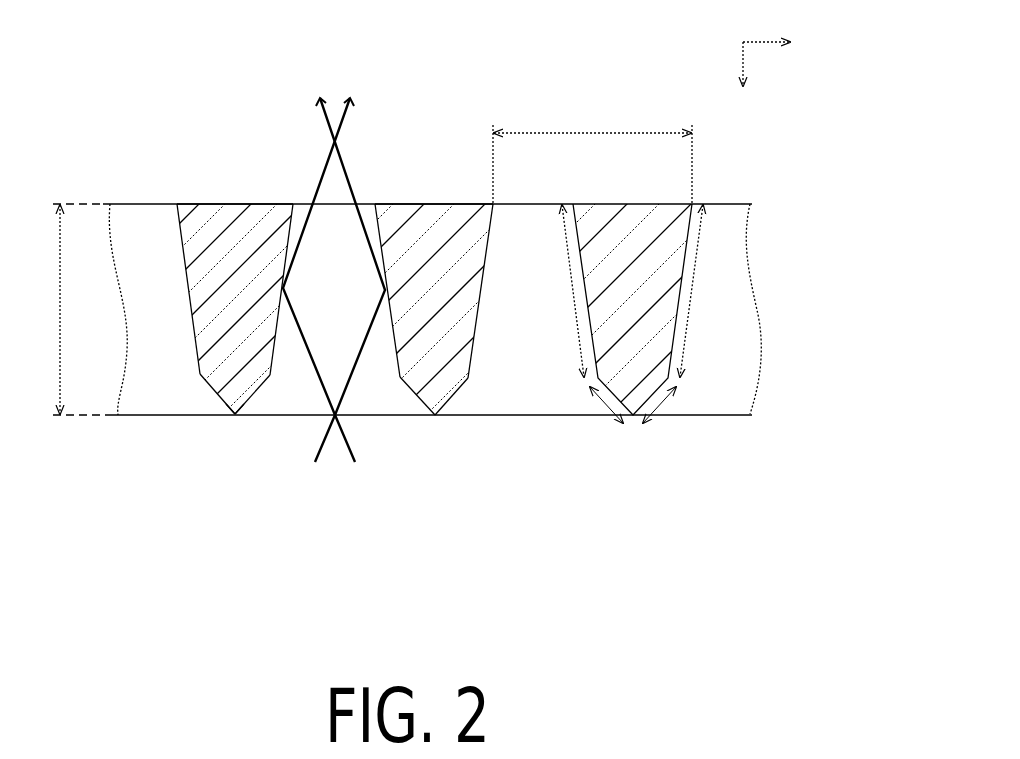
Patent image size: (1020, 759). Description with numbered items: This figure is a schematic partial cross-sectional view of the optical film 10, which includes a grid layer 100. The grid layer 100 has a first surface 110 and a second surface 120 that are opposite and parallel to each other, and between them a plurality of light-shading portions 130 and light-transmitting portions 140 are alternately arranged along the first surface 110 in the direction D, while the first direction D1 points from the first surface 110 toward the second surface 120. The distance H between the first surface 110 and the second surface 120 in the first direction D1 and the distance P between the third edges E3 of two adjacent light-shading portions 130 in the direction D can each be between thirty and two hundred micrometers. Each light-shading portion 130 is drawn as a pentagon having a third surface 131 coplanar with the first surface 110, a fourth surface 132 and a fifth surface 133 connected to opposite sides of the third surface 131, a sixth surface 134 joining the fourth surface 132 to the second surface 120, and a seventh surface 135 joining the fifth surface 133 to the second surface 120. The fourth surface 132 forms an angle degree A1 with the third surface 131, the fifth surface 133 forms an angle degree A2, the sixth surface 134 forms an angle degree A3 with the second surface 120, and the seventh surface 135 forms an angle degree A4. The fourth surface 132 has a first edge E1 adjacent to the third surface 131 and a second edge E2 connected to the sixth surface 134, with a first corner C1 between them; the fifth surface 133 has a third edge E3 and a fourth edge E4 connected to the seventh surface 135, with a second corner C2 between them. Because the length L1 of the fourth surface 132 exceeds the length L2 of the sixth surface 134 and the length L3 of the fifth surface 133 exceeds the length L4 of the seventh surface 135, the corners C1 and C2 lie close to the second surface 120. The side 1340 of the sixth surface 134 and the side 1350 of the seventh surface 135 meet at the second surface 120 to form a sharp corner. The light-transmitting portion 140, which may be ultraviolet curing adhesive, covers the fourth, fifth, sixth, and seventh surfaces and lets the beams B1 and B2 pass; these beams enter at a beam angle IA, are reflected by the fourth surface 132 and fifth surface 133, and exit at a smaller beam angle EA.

The optical film 10 is at (53, 78).
The grid layer 100 is at (137, 203).
The first surface 110 is at (735, 203).
The second surface 120 is at (732, 418).
The light-shading portion 130 is at (644, 226).
The third surface 131 is at (238, 207).
The fourth surface 132 is at (195, 252).
The fifth surface 133 is at (273, 270).
The sixth surface 134 is at (222, 402).
The seventh surface 135 is at (250, 402).
The side of the sixth surface 1340 is at (232, 417).
The side of the seventh surface 1350 is at (240, 417).
The light-transmitting portion 140 is at (723, 313).
The beam angle EA is at (335, 135).
The distance H is at (73, 309).
The distance P is at (592, 154).
The direction D is at (778, 43).
The first direction D1 is at (743, 81).
The length of the fourth surface L1 is at (563, 240).
The length of the sixth surface L2 is at (607, 415).
The length of the fifth surface L3 is at (700, 250).
The length of the seventh surface L4 is at (660, 415).
The first edge E1 is at (188, 275).
The second edge E2 is at (206, 374).
The third edge E3 is at (285, 279).
The fourth edge E4 is at (200, 348).
The first corner C1 is at (200, 377).
The second corner C2 is at (266, 381).
The beam B1 is at (319, 455).
The beam B2 is at (352, 455).
The beam angle IA is at (335, 427).
The angle degree of the first included angle A1 is at (386, 205).
The angle degree of the second included angle A2 is at (492, 203).
The angle degree of the third included angle A3 is at (437, 418).
The angle degree of the fourth included angle A4 is at (440, 418).